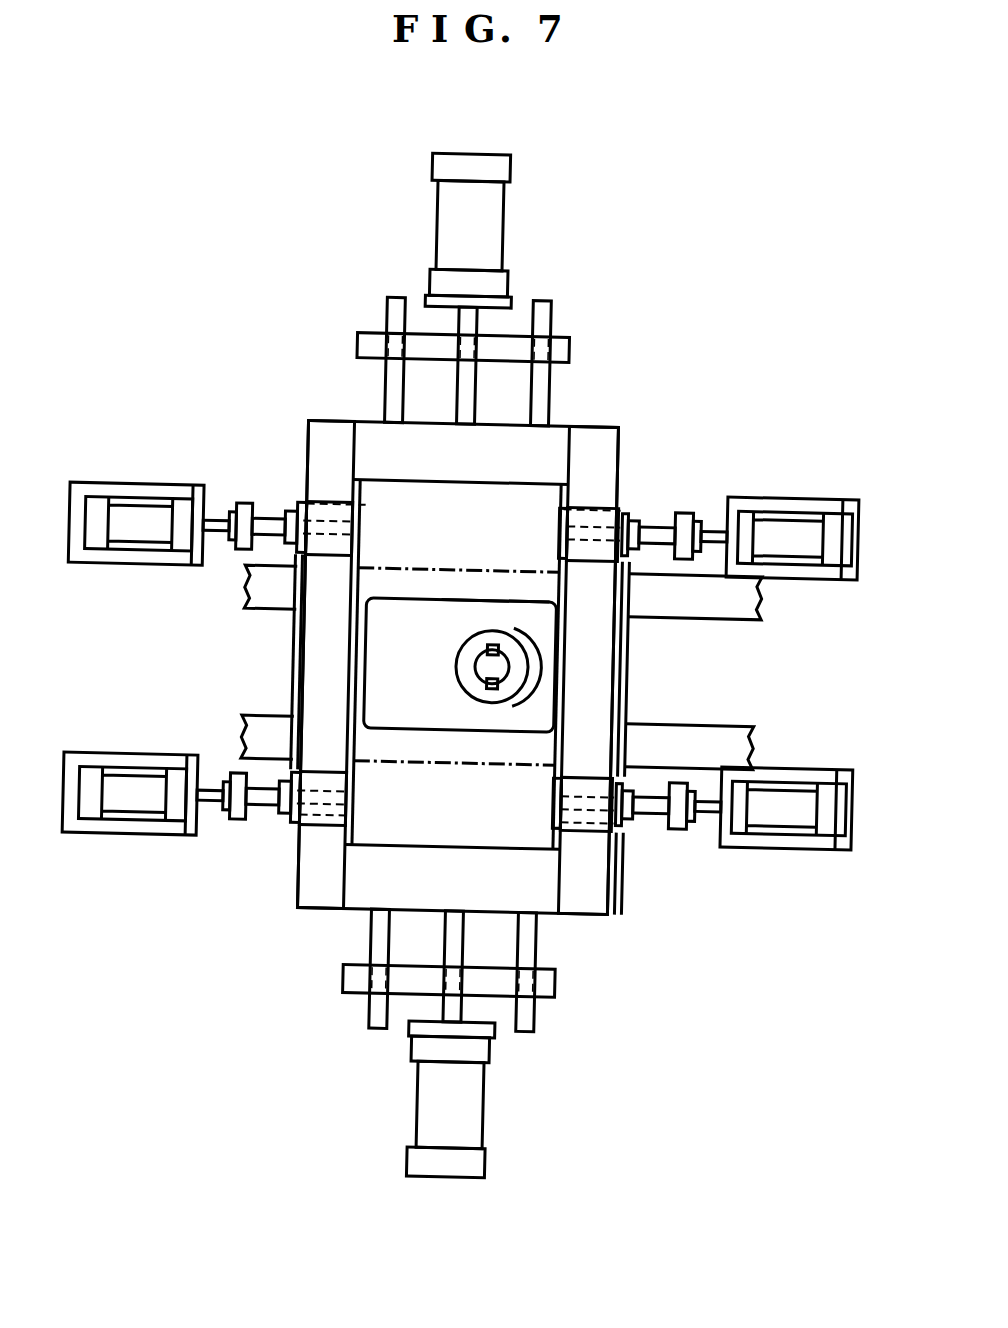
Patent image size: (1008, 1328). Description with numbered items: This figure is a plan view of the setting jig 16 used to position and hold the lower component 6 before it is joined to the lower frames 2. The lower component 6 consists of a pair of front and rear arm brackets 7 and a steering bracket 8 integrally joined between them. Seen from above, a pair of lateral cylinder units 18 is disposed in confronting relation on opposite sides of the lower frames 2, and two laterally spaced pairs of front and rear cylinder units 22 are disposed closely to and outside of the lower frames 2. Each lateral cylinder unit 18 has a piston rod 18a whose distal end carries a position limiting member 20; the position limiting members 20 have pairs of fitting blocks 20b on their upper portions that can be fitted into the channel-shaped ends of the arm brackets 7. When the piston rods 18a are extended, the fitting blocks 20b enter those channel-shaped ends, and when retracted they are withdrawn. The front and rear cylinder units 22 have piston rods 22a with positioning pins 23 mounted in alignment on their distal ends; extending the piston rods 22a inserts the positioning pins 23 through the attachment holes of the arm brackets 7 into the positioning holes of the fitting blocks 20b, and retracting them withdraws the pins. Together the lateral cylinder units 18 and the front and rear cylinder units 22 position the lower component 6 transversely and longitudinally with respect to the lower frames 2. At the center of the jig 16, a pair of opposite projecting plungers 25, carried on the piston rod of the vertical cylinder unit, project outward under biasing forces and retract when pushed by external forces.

The lower frames 2 is at (720, 623).
The lower component 6 is at (511, 596).
The arm brackets 7 is at (297, 655).
The steering bracket 8 is at (437, 597).
The setting jig 16 is at (310, 322).
The lateral cylinder units 18 is at (481, 214).
The piston rods 18a is at (470, 397).
The position limiting members 20 is at (383, 453).
The fitting blocks 20b is at (323, 513).
The front and rear cylinder units 22 is at (130, 512).
The piston rods 22a is at (215, 513).
The positioning pins 23 is at (368, 507).
The projecting plungers 25 is at (491, 690).